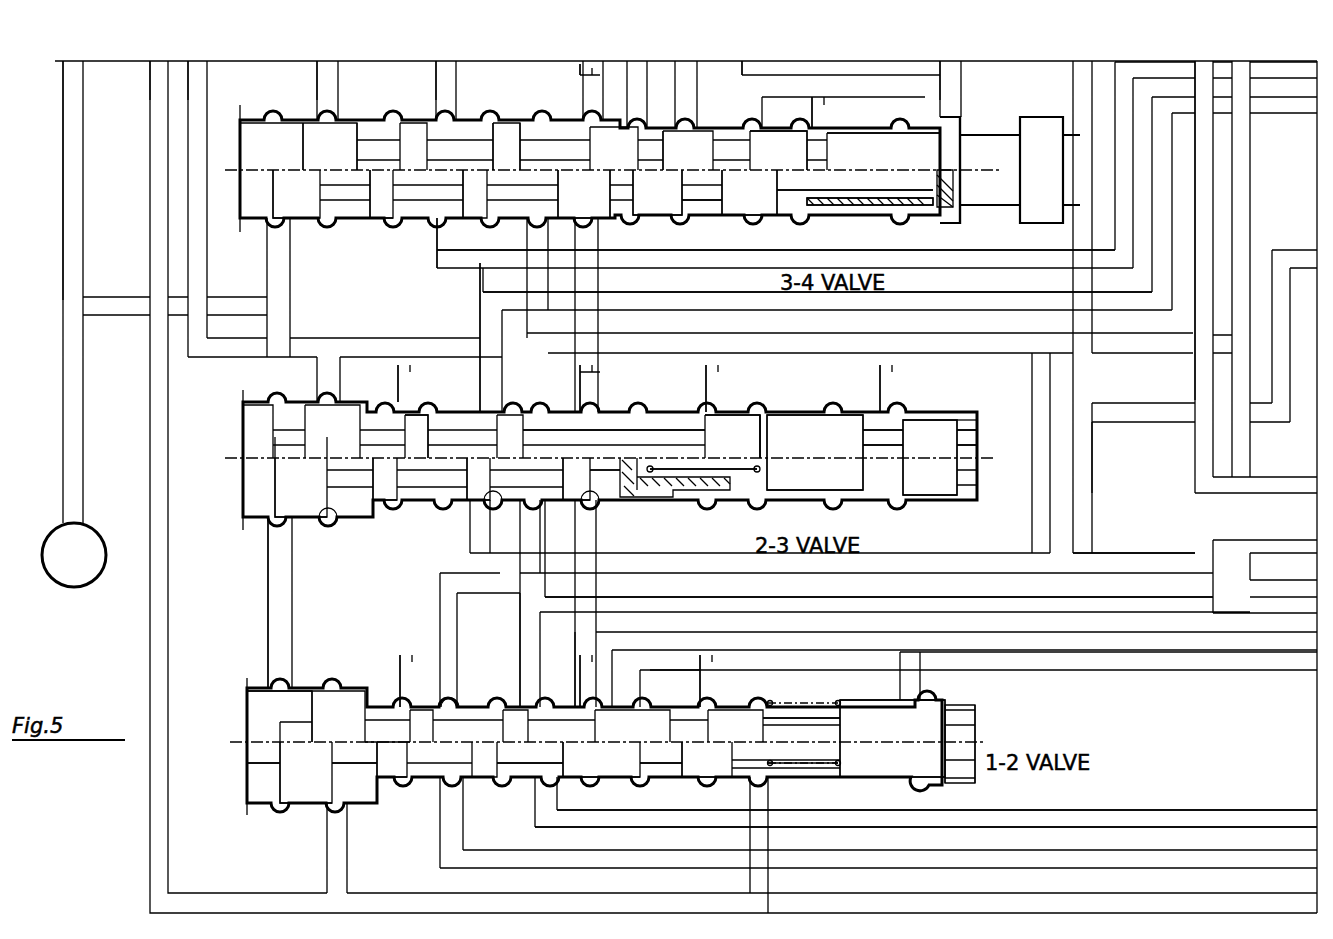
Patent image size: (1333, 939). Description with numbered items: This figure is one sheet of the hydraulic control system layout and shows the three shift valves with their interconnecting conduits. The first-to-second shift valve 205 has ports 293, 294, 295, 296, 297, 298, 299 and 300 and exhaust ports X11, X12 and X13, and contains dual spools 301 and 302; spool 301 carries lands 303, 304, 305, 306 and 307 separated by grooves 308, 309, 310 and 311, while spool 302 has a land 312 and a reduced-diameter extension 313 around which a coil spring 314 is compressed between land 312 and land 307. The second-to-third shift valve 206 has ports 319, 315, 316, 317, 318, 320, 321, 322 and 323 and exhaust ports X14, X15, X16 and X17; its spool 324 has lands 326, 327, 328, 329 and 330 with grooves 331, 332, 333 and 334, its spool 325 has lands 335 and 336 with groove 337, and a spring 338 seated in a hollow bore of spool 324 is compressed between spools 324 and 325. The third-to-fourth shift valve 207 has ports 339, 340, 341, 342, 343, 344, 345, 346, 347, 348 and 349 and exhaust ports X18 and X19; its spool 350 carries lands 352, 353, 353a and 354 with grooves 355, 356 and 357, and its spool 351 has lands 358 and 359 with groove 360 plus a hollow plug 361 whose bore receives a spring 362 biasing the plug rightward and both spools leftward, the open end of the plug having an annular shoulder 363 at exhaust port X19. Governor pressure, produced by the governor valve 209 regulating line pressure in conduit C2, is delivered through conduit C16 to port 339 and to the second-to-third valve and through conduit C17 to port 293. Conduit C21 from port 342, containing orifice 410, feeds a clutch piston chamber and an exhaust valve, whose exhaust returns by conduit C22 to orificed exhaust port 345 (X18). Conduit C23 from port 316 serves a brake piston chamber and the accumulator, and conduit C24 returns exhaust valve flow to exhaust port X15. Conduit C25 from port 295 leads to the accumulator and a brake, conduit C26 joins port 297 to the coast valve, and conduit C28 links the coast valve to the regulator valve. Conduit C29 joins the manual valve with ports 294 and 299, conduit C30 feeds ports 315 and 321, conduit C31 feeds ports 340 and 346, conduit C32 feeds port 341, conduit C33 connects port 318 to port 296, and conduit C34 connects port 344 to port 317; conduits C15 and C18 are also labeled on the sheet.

The 1-2 shift valve 205 is at (247, 707).
The 2-3 shift valve 206 is at (243, 432).
The 3-4 shift valve 207 is at (240, 128).
The governor valve 209 is at (100, 530).
The port 293 is at (278, 682).
The port 294 is at (338, 815).
The port 295 is at (475, 785).
The port 296 is at (495, 700).
The port 297 is at (570, 780).
The port 298 is at (655, 700).
The port 299 is at (768, 780).
The port 300 is at (915, 690).
The valve spool 301 is at (280, 735).
The spool or plug 302 is at (975, 730).
The land 303 is at (285, 773).
The land 304 is at (385, 805).
The land 305 is at (497, 778).
The land 306 is at (632, 778).
The land 307 is at (695, 778).
The groove 308 is at (312, 810).
The groove 309 is at (440, 783).
The groove 310 is at (537, 785).
The groove 311 is at (665, 775).
The land 312 is at (900, 772).
The extension 313 is at (810, 750).
The coil spring 314 is at (825, 705).
The port 315 is at (332, 396).
The port 316 is at (430, 510).
The port 317 is at (485, 408).
The port 318 is at (540, 512).
The port 319 is at (278, 398).
The port 320 is at (640, 508).
The port 321 is at (762, 408).
The port 322 is at (828, 414).
The port 323 is at (965, 405).
The valve spool 324 is at (243, 470).
The valve spool 325 is at (975, 445).
The land 326 is at (305, 522).
The land 327 is at (375, 510).
The land 328 is at (483, 505).
The land 329 is at (584, 479).
The land 330 is at (732, 436).
The groove 331 is at (352, 530).
The groove 332 is at (425, 510).
The groove 333 is at (548, 475).
The groove 334 is at (685, 410).
The land 335 is at (805, 492).
The land 336 is at (935, 495).
The groove 337 is at (880, 495).
The spring 338 is at (750, 480).
The port 339 is at (275, 230).
The port 340 is at (322, 120).
The port 341 is at (385, 117).
The port 342 is at (425, 222).
The port 343 is at (487, 112).
The port 344 is at (548, 115).
The orificed exhaust port 345 is at (622, 222).
The port 346 is at (668, 222).
The port 347 is at (680, 118).
The port 348 is at (765, 222).
The port 349 is at (960, 125).
The valve spool 350 is at (240, 200).
The valve spool 351 is at (778, 150).
The land 352 is at (306, 222).
The land 353 is at (378, 222).
The land 353a is at (487, 185).
The land 354 is at (584, 194).
The groove 355 is at (345, 232).
The groove 356 is at (440, 225).
The groove 357 is at (522, 220).
The land 358 is at (657, 192).
The land 359 is at (749, 192).
The groove 360 is at (707, 215).
The hollow plug 361 is at (858, 210).
The spring 362 is at (935, 212).
The annular shoulder 363 is at (832, 148).
The orifice 410 is at (478, 262).
The exhaust port X11 is at (398, 672).
The exhaust port X12 is at (578, 675).
The exhaust port X13 is at (712, 685).
The exhaust port X14 is at (408, 375).
The exhaust port X15 is at (578, 392).
The exhaust port X16 is at (700, 372).
The exhaust port X17 is at (880, 390).
The exhaust port X18 is at (578, 74).
The exhaust port X19 is at (815, 104).
The conduit C2 is at (1158, 420).
The channel C15 is at (690, 74).
The conduit C16 is at (118, 300).
The conduit C17 is at (268, 580).
The channel C18 is at (961, 74).
The conduit C21 is at (972, 250).
The conduit C22 is at (950, 295).
The conduit C23 is at (1130, 555).
The conduit C24 is at (1122, 612).
The conduit C25 is at (1093, 853).
The conduit C26 is at (1093, 810).
The conduit C28 is at (1195, 378).
The conduit C29 is at (150, 84).
The conduit C30 is at (207, 80).
The conduit C31 is at (317, 74).
The conduit C32 is at (436, 96).
The conduit C33 is at (480, 622).
The conduit C34 is at (480, 322).